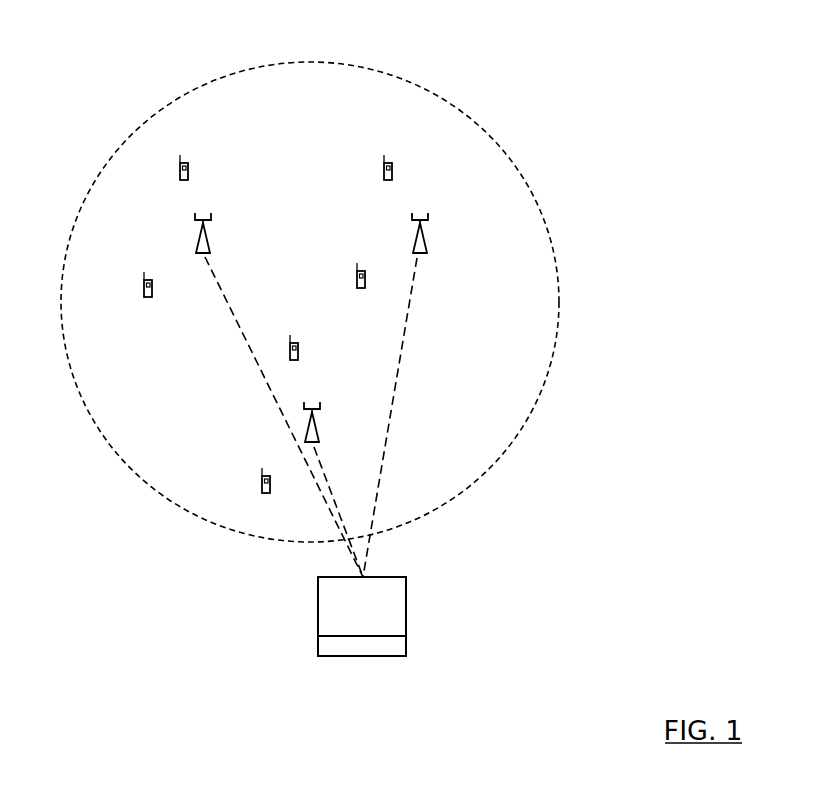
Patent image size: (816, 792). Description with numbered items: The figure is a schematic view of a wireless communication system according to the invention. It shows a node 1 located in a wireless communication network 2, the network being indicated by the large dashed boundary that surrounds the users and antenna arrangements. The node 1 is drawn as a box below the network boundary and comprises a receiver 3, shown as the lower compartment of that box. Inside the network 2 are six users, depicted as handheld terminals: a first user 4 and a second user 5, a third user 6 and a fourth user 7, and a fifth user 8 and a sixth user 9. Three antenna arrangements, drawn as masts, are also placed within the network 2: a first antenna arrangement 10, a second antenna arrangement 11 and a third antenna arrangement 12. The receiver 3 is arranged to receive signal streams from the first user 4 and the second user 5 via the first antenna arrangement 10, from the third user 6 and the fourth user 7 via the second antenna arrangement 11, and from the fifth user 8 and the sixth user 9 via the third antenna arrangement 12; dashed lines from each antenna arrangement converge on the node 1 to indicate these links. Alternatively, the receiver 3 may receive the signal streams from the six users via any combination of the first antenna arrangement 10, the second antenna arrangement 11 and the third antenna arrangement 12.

The node 1 is at (433, 611).
The wireless communication network 2 is at (573, 185).
The receiver 3 is at (392, 645).
The first user 4 is at (137, 284).
The second user 5 is at (173, 170).
The third user 6 is at (396, 165).
The fourth user 7 is at (366, 275).
The fifth user 8 is at (252, 482).
The sixth user 9 is at (285, 354).
The first antenna arrangement 10 is at (226, 212).
The second antenna arrangement 11 is at (440, 213).
The third antenna arrangement 12 is at (342, 407).